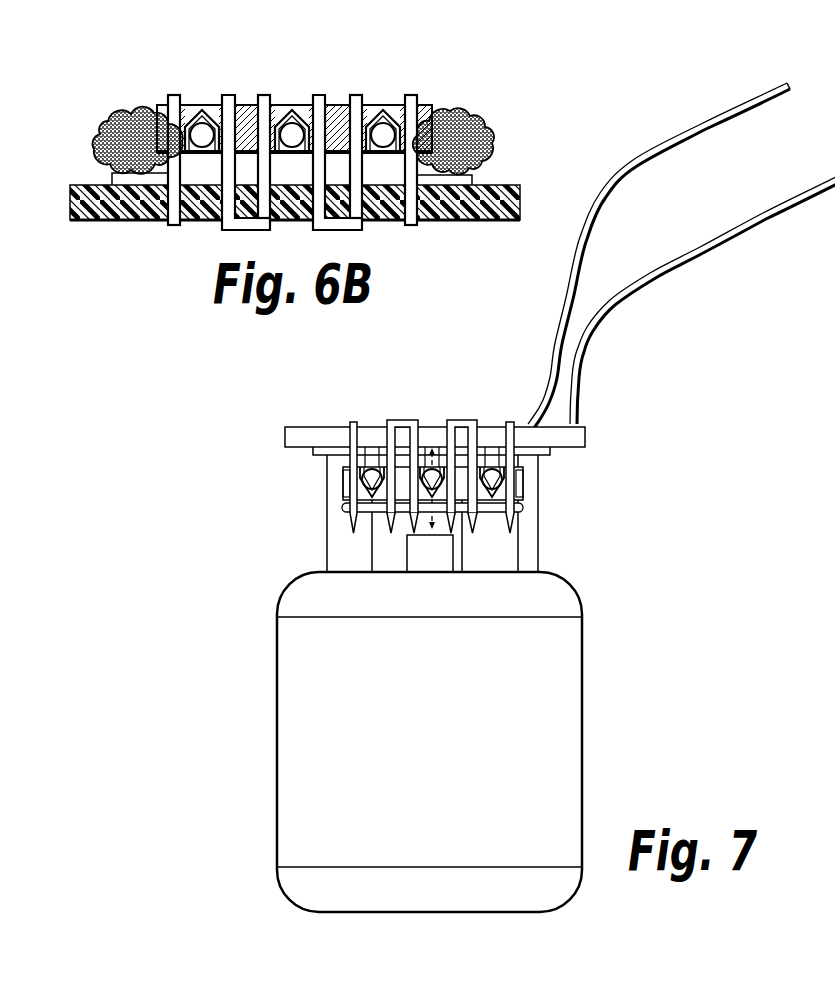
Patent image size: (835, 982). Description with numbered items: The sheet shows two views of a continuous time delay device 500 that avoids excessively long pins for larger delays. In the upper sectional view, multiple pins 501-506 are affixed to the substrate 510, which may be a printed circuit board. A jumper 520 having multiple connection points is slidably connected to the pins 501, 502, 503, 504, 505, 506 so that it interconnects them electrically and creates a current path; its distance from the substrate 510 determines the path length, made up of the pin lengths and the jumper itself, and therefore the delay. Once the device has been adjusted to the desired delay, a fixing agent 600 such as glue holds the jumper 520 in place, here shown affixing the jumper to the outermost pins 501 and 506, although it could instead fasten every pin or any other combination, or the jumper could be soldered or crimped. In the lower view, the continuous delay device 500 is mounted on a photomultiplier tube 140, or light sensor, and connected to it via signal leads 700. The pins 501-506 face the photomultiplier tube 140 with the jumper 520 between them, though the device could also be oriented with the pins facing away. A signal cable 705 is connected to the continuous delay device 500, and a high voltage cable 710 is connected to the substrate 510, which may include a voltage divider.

In FIG. 7, the photomultiplier tube 140 is at (277, 735).
In FIG. 7, the continuous time delay device 500 is at (272, 411).
In FIG. 6B, the pin 501 is at (172, 94).
In FIG. 6B, the pin 502 is at (228, 93).
In FIG. 6B, the pin 503 is at (268, 93).
In FIG. 6B, the pin 504 is at (322, 93).
In FIG. 6B, the pin 505 is at (357, 93).
In FIG. 6B, the pin 506 is at (410, 93).
In FIG. 7, the pins 501-506 is at (522, 507).
In FIG. 6B, the substrate 510 is at (520, 193).
In FIG. 7, the substrate 510 is at (585, 437).
In FIG. 6B, the jumper 520 is at (430, 110).
In FIG. 7, the jumper 520 is at (523, 485).
In FIG. 6B, the fixing agent 600 is at (122, 122).
In FIG. 7, the signal leads 700 is at (327, 520).
In FIG. 7, the signal cable 705 is at (703, 122).
In FIG. 7, the high voltage cable 710 is at (767, 217).